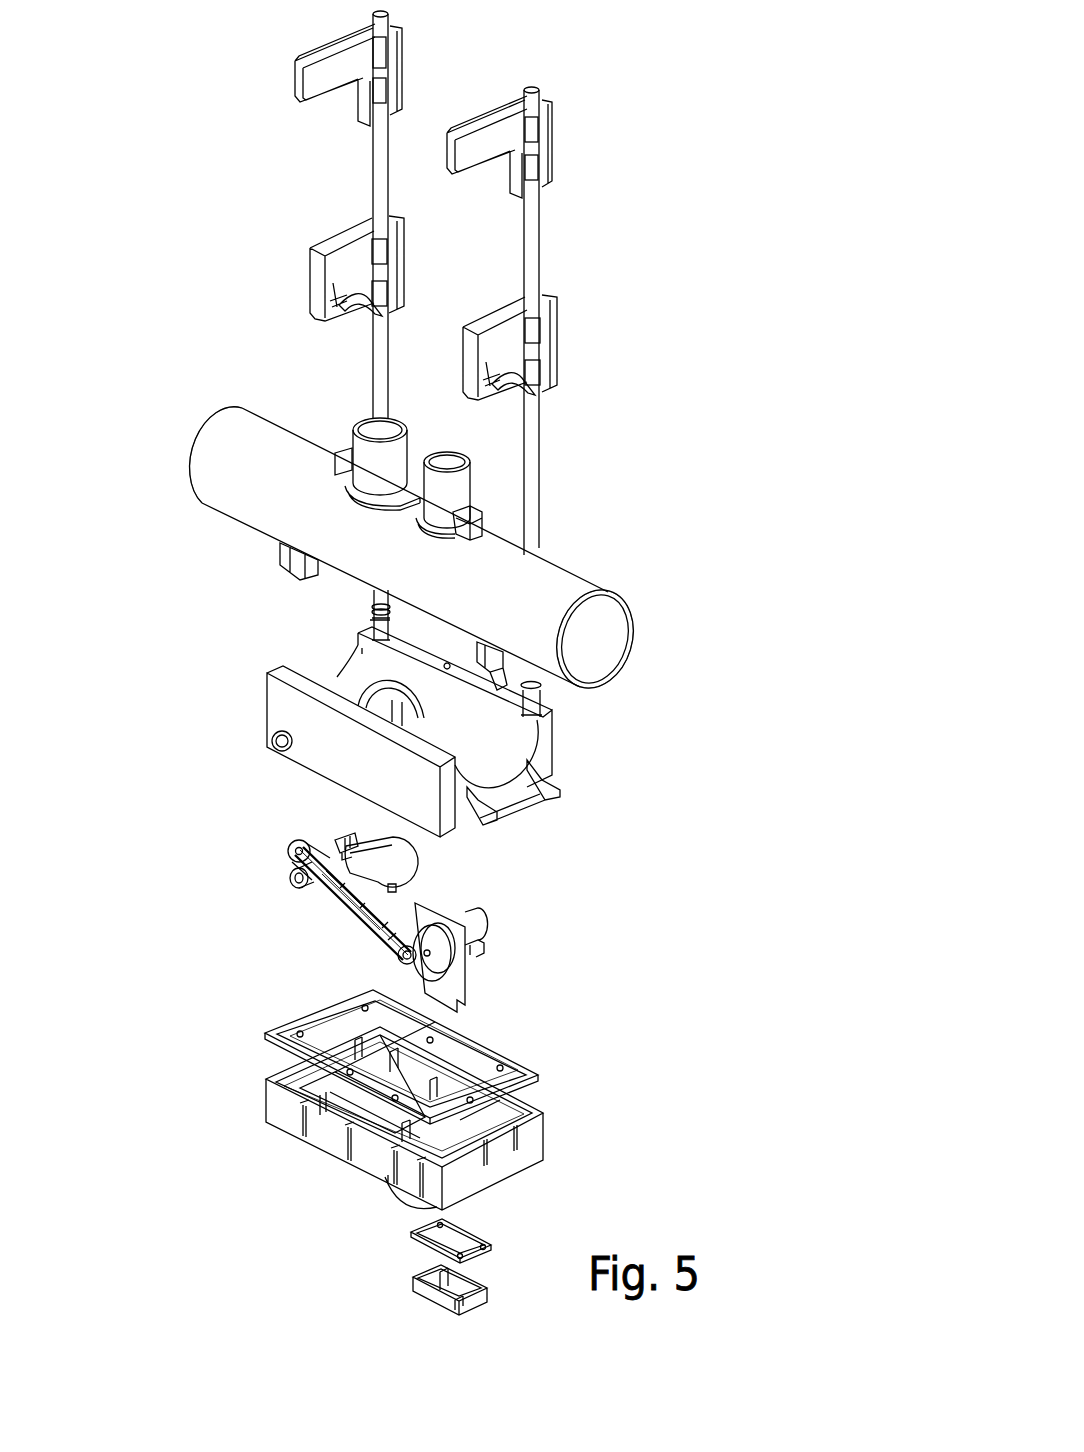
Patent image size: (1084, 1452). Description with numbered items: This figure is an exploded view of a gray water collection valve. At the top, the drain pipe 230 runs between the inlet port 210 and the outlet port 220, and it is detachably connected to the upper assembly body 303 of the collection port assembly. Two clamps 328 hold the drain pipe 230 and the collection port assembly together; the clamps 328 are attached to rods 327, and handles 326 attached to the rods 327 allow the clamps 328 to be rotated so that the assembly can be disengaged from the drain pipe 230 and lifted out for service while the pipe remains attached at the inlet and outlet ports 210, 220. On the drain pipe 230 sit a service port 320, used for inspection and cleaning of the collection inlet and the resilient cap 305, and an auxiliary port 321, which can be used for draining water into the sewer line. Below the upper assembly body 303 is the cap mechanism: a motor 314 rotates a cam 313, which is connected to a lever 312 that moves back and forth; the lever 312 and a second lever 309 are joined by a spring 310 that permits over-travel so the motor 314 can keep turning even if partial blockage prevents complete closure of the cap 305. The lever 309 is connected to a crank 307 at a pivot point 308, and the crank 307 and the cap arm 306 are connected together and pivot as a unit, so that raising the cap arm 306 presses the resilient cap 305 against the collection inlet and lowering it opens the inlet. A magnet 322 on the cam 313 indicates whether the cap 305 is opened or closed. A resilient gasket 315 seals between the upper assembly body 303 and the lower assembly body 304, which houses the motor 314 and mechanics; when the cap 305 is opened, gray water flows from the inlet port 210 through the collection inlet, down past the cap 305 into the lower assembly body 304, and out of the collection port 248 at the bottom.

The inlet port 210 is at (193, 462).
The outlet port 220 is at (637, 617).
The drain pipe 230 is at (523, 578).
The collection port 248 is at (395, 1206).
The upper assembly body 303 is at (265, 697).
The lower assembly body 304 is at (548, 1147).
The resilient cap 305 is at (378, 862).
The cap arm 306 is at (350, 835).
The crank 307 is at (283, 873).
The pivot point 308 is at (270, 745).
The lever 309 is at (333, 887).
The spring 310 is at (350, 917).
The lever 312 is at (387, 948).
The cam 313 is at (455, 960).
The motor 314 is at (477, 918).
The resilient gasket 315 is at (545, 1075).
The service port 320 is at (365, 416).
The auxiliary port 321 is at (470, 468).
The magnet 322 is at (445, 942).
The handles 326 is at (495, 132).
The rods 327 is at (531, 253).
The clamps 328 is at (507, 346).